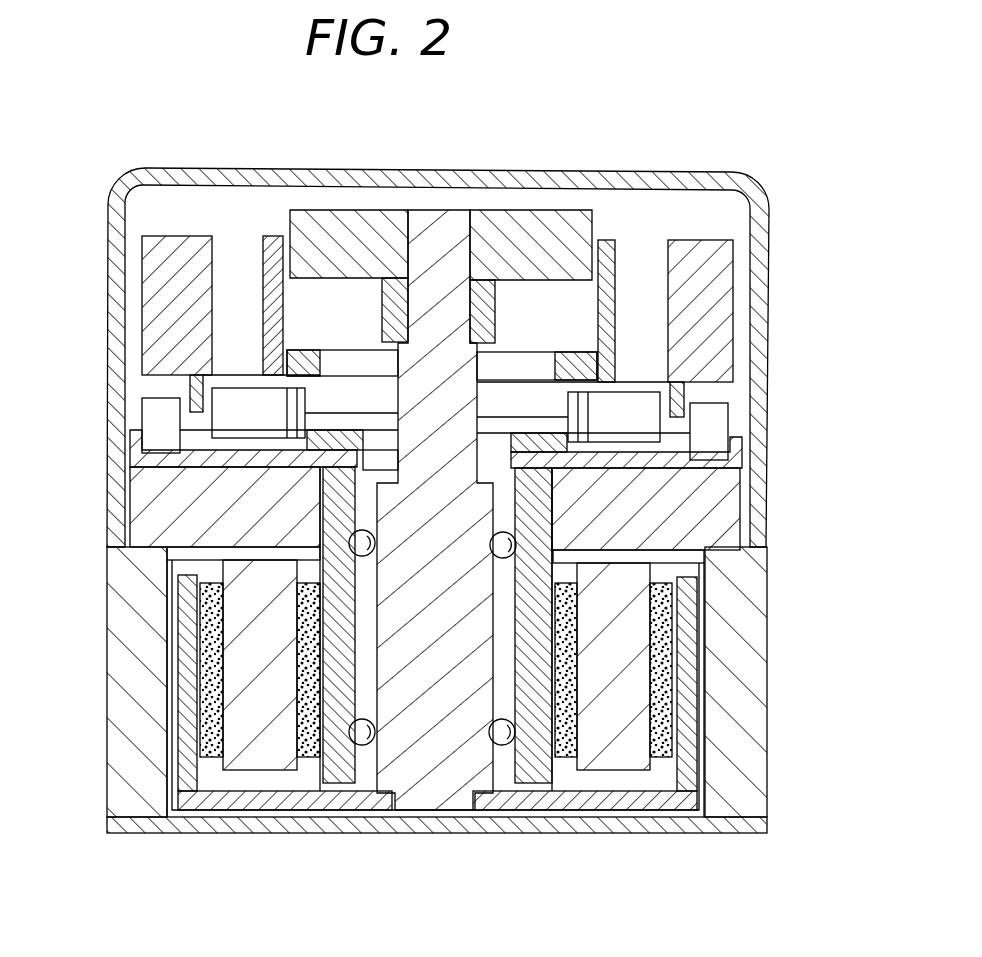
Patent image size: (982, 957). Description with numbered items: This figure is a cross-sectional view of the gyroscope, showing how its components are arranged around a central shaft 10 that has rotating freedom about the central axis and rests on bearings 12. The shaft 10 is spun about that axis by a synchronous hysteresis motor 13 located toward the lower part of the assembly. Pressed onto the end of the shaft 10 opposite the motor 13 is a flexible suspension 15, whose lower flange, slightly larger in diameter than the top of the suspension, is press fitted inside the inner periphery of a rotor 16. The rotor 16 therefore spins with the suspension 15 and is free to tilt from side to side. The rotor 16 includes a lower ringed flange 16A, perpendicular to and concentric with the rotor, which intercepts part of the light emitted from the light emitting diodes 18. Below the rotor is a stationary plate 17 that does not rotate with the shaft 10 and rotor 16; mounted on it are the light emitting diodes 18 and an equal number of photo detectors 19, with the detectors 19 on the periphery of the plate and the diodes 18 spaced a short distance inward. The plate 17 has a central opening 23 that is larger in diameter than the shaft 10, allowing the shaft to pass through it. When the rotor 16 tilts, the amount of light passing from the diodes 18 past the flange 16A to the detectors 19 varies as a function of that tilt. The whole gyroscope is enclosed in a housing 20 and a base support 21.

The shaft 10 is at (478, 367).
The bearings 12 is at (377, 732).
The synchronous hysteresis motor 13 is at (223, 560).
The flexible suspension 15 is at (590, 210).
The rotor 16 is at (180, 236).
The lower ringed flange 16A is at (192, 383).
The stationary plate 17 is at (742, 438).
The light emitting diodes 18 is at (247, 405).
The photo detectors 19 is at (728, 423).
The housing 20 is at (772, 215).
The base support 21 is at (766, 707).
The central opening 23 is at (377, 437).